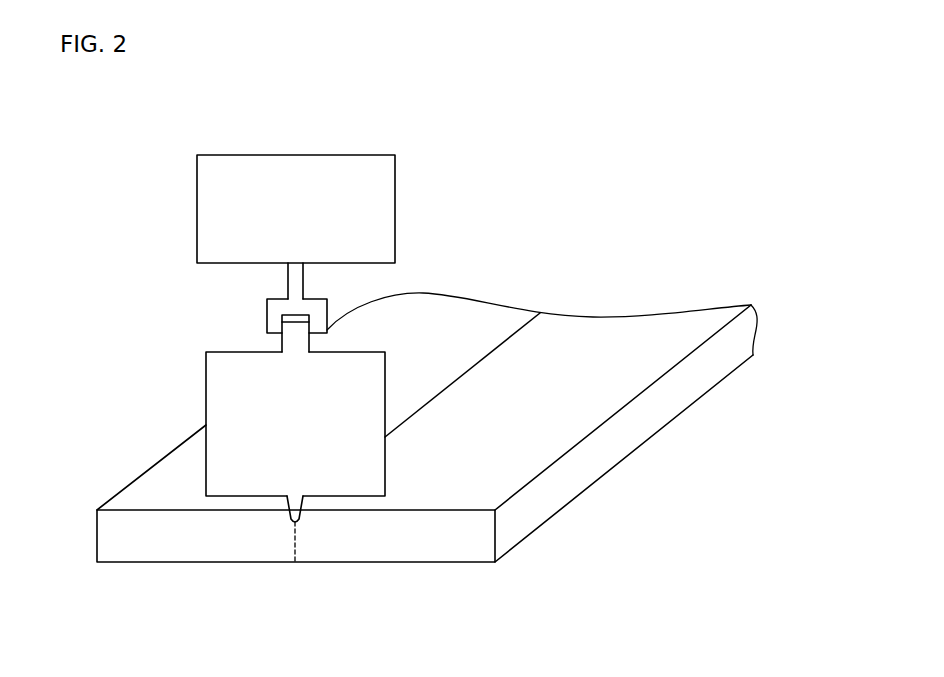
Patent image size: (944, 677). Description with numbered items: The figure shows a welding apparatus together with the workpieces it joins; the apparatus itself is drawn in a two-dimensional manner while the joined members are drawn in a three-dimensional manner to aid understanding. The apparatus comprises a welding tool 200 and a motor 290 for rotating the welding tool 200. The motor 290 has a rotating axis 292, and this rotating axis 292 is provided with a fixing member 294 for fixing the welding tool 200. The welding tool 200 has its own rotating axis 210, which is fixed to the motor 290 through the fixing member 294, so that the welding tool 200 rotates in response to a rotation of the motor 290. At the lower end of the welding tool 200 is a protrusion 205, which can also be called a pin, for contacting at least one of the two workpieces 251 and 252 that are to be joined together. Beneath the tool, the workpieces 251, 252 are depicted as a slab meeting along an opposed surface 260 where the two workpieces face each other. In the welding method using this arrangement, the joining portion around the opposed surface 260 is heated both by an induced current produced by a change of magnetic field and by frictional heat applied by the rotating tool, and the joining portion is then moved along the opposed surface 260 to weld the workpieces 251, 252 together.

The welding tool 200 is at (392, 380).
The protrusion 205 is at (299, 518).
The rotating axis 210 is at (298, 343).
The workpiece 251 is at (133, 552).
The workpiece 252 is at (458, 552).
The opposed surface 260 is at (294, 543).
The motor 290 is at (393, 154).
The rotating axis 292 is at (296, 283).
The fixing member 294 is at (272, 321).